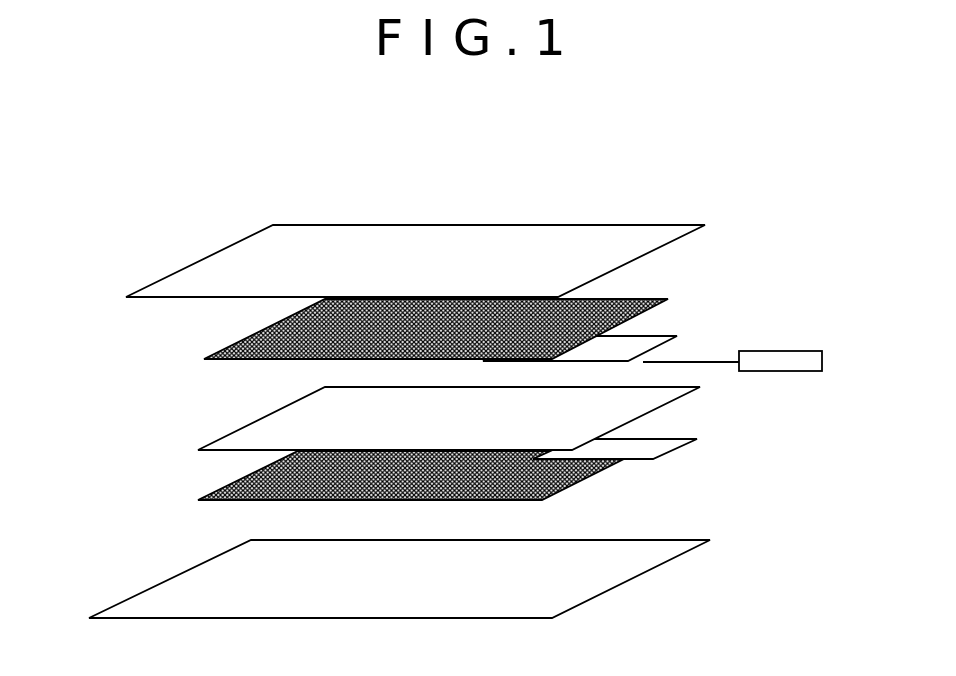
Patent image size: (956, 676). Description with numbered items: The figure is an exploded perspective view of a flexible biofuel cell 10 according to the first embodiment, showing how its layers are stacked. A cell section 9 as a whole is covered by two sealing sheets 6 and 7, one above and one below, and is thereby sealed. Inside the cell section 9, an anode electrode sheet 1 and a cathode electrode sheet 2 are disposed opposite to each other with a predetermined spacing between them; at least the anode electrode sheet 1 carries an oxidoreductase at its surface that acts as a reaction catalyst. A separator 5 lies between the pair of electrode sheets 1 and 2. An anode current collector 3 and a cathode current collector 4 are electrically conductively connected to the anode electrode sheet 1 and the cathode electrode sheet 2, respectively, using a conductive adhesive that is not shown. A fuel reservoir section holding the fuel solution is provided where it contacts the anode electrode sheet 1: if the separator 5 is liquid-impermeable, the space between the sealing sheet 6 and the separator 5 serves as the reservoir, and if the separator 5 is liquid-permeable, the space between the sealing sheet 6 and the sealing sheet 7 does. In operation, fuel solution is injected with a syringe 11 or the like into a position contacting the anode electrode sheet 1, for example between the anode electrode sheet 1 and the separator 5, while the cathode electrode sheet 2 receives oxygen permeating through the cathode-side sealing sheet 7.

The anode electrode sheet 1 is at (233, 342).
The cathode electrode sheet 2 is at (233, 482).
The anode current collector 3 is at (650, 340).
The cathode current collector 4 is at (657, 451).
The separator 5 is at (647, 405).
The sealing sheet 6 is at (223, 260).
The sealing sheet 7 is at (150, 600).
The cell section 9 is at (158, 301).
The biofuel cell 10 is at (667, 189).
The syringe 11 is at (779, 363).